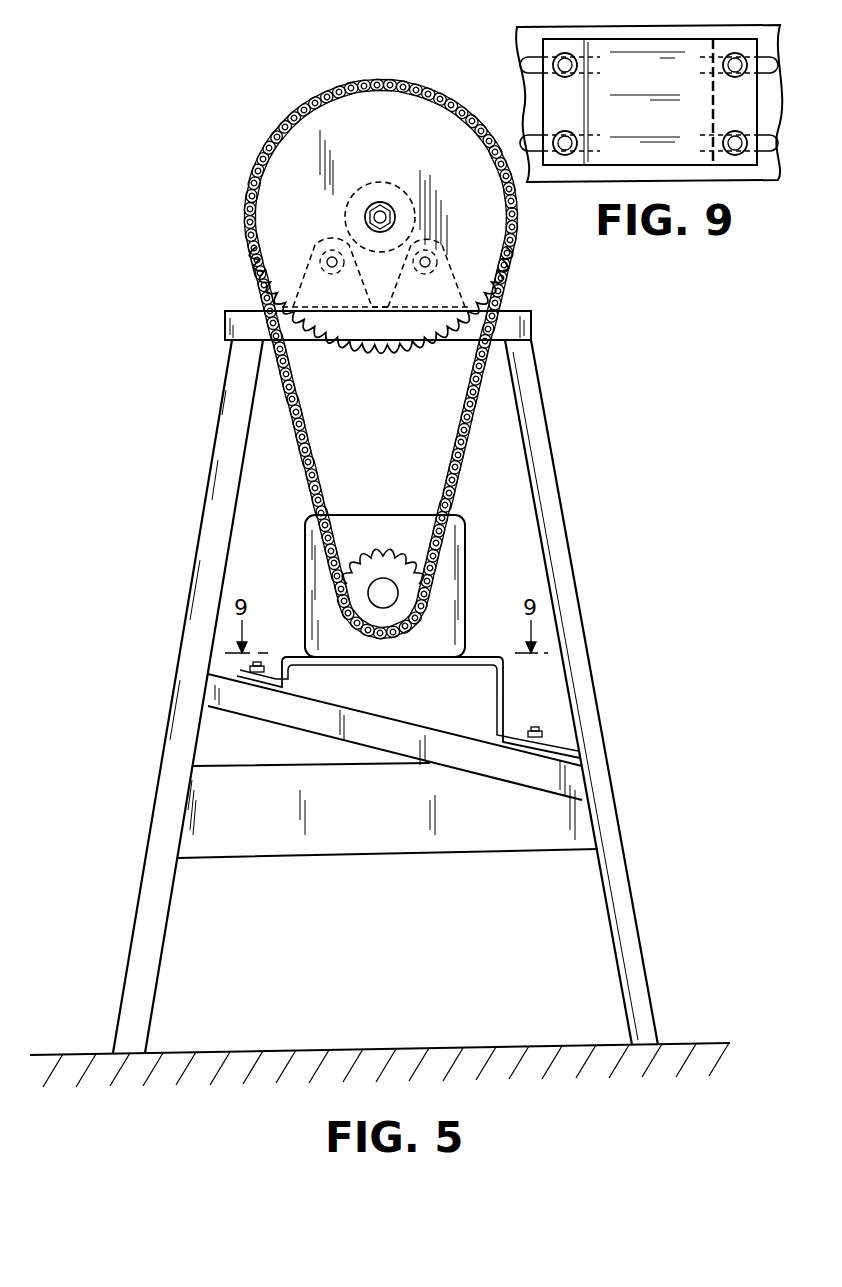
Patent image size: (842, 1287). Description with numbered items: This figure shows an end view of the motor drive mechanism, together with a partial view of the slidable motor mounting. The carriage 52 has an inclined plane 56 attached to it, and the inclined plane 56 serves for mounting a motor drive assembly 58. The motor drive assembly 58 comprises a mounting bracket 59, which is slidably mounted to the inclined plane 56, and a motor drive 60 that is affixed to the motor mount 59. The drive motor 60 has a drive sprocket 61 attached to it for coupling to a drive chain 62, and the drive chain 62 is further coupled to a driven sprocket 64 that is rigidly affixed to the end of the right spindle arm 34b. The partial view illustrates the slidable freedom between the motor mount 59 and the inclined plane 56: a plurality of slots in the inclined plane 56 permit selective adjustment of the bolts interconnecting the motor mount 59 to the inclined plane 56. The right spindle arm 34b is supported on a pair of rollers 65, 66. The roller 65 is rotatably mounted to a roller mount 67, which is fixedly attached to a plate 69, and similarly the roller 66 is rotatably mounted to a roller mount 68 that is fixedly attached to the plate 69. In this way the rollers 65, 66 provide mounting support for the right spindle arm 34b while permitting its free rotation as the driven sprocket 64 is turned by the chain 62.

In FIG. 5, the carriage 52 is at (593, 558).
In FIG. 5, the plate 69 is at (520, 311).
In FIG. 5, the driven sprocket 64 is at (393, 108).
In FIG. 5, the right spindle arm 34b is at (381, 182).
In FIG. 5, the roller 65 is at (447, 226).
In FIG. 5, the roller 66 is at (305, 278).
In FIG. 5, the roller mount 67 is at (448, 268).
In FIG. 5, the roller mount 68 is at (310, 268).
In FIG. 5, the drive chain 62 is at (312, 441).
In FIG. 5, the motor drive 60 is at (465, 531).
In FIG. 5, the drive sprocket 61 is at (386, 554).
In FIG. 5, the motor drive assembly 58 is at (408, 661).
In FIG. 5, the mounting bracket 59 is at (505, 705).
In FIG. 9, the mounting bracket 59 is at (655, 52).
In FIG. 5, the inclined plane 56 is at (402, 715).
In FIG. 9, the inclined plane 56 is at (733, 182).